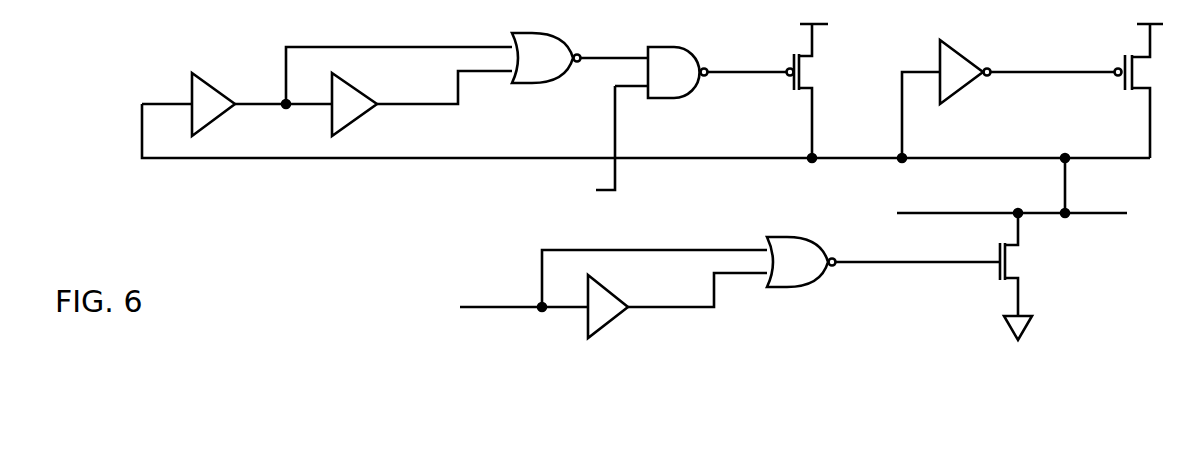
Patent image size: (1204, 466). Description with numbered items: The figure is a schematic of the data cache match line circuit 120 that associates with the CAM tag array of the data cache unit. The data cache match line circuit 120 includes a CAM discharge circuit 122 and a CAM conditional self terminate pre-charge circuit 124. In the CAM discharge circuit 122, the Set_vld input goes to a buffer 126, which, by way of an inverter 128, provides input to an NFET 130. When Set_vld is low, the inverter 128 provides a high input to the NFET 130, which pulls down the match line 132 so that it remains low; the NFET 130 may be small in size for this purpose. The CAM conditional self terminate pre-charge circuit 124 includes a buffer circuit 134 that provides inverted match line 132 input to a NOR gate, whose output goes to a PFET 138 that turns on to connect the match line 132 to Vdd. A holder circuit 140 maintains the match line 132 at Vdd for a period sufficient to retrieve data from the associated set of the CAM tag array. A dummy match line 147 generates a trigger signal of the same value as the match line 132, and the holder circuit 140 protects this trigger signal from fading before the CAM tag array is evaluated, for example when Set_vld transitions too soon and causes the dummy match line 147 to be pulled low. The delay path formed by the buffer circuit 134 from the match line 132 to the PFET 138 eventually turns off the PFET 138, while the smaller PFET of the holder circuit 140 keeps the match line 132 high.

The data cache match line circuit 120 is at (628, 208).
The CAM discharge circuit 122 is at (508, 270).
The CAM conditional self terminate pre-charge circuit 124 is at (236, 46).
The buffer 126 is at (676, 290).
The inverter 128 is at (808, 237).
The NFET 130 is at (1010, 270).
The match line 132 is at (1100, 212).
The buffer circuit 134 is at (283, 140).
The PFET 138 is at (800, 80).
The holder circuit 140 is at (1038, 152).
The dummy match line 147 is at (405, 162).